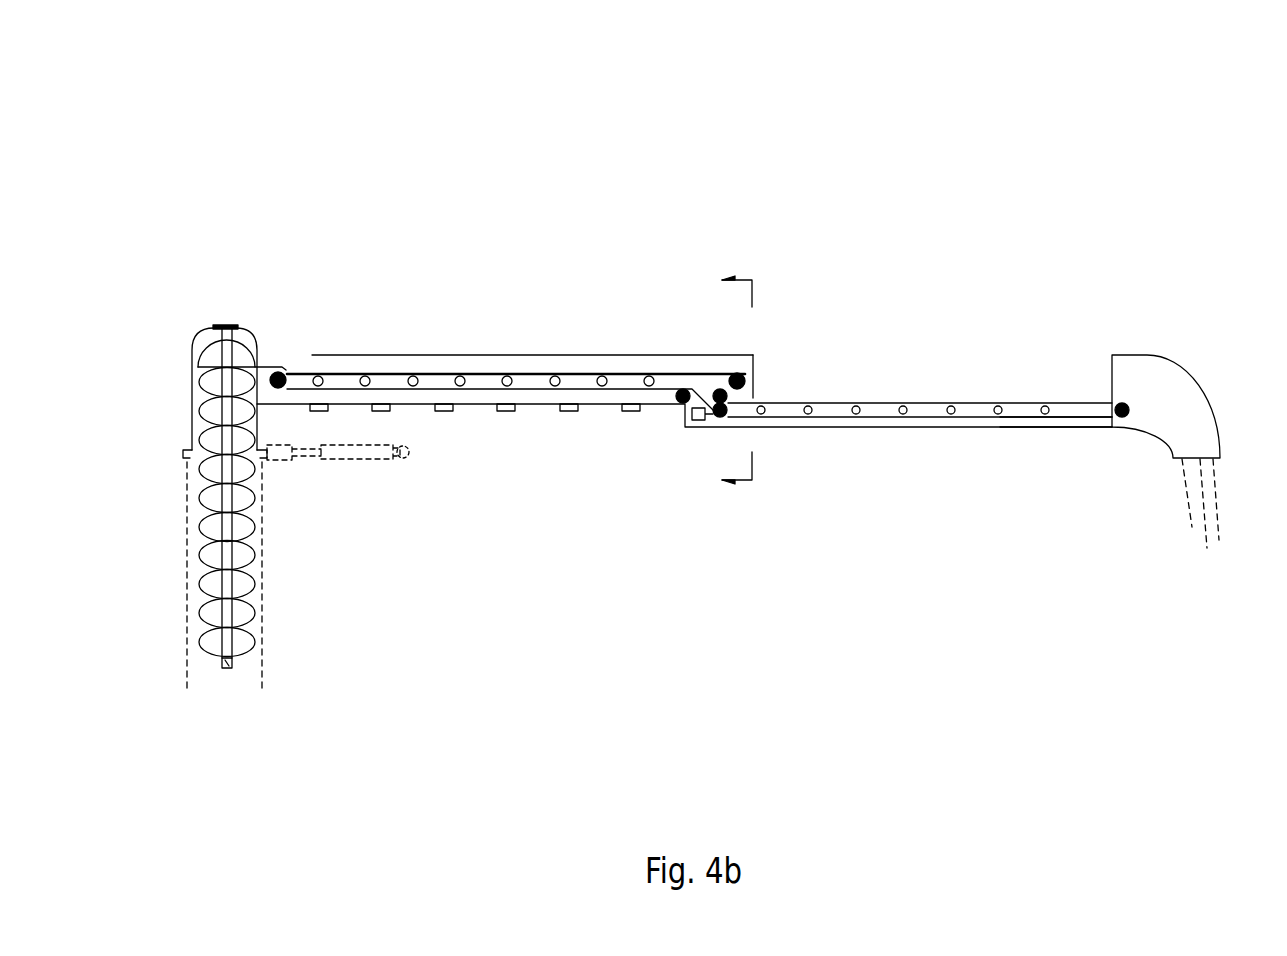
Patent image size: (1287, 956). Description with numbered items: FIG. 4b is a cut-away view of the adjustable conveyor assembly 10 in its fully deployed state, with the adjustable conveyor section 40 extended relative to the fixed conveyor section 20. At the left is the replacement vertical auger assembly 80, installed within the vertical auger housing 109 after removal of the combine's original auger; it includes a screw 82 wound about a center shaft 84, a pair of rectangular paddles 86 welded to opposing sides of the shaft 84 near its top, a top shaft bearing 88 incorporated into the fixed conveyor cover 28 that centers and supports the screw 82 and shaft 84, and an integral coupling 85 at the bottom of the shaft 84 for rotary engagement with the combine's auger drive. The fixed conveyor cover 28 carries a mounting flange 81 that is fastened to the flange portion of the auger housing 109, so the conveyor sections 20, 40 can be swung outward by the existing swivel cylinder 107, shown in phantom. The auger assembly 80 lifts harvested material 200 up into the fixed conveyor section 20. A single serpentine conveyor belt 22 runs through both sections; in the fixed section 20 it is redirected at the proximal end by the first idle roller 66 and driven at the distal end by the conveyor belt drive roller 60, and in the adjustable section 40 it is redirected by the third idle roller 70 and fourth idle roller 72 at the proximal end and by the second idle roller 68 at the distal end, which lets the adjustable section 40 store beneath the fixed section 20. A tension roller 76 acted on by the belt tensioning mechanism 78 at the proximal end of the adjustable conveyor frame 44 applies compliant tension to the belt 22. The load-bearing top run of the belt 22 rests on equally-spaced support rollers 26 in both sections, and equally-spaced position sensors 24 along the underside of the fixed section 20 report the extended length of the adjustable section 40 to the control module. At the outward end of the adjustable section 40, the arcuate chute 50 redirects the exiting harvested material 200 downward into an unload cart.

The adjustable conveyor assembly 10 is at (1170, 154).
The fixed conveyor section 20 is at (585, 352).
The conveyor belt 22 is at (525, 387).
The position sensor 24 is at (442, 412).
The support roller 26 is at (460, 376).
The fixed conveyor cover 28 is at (545, 355).
The adjustable conveyor section 40 is at (940, 400).
The adjustable conveyor frame 44 is at (925, 422).
The chute 50 is at (1153, 415).
The conveyor belt drive roller 60 is at (741, 374).
The first idle roller 66 is at (285, 378).
The second idle roller 68 is at (1125, 404).
The third idle roller 70 is at (680, 402).
The fourth idle roller 72 is at (716, 390).
The tension roller 76 is at (727, 414).
The belt tensioning mechanism 78 is at (697, 421).
The replacement vertical auger assembly 80 is at (192, 318).
The mounting flange 81 is at (183, 449).
The screw 82 is at (210, 525).
The shaft 84 is at (225, 553).
The coupling 85 is at (229, 664).
The paddle 86 is at (312, 355).
The top shaft bearing 88 is at (226, 328).
The swivel cylinder 107 is at (402, 462).
The auger housing 109 is at (185, 657).
The harvested material 200 is at (1187, 493).